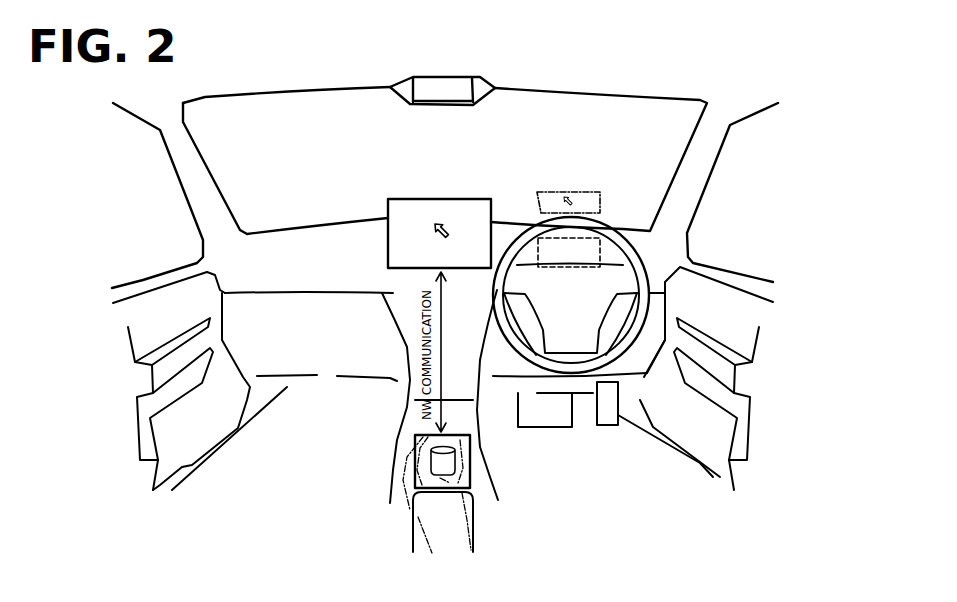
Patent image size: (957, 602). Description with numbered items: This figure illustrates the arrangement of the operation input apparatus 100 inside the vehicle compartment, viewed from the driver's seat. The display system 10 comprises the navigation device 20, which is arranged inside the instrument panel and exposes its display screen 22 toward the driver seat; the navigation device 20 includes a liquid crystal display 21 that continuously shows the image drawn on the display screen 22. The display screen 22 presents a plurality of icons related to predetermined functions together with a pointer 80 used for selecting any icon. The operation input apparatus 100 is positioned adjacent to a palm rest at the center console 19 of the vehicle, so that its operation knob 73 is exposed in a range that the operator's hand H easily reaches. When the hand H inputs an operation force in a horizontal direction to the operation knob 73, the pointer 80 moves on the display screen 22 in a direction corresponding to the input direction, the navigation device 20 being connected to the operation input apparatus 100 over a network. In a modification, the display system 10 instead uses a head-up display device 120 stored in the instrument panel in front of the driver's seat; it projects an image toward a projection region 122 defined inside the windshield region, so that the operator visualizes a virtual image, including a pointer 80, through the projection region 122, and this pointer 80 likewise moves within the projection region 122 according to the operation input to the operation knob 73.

The display system 10 is at (331, 410).
The center console 19 is at (412, 533).
The navigation device 20 is at (388, 250).
The liquid crystal display 21 is at (460, 199).
The display screen 22 is at (408, 208).
The operation knob 73 is at (458, 450).
The pointer 80 is at (440, 209).
The operation input apparatus 100 is at (411, 466).
The head-up display device 120 is at (602, 248).
The projection region 122 is at (547, 188).
The hand of the operator H is at (478, 473).